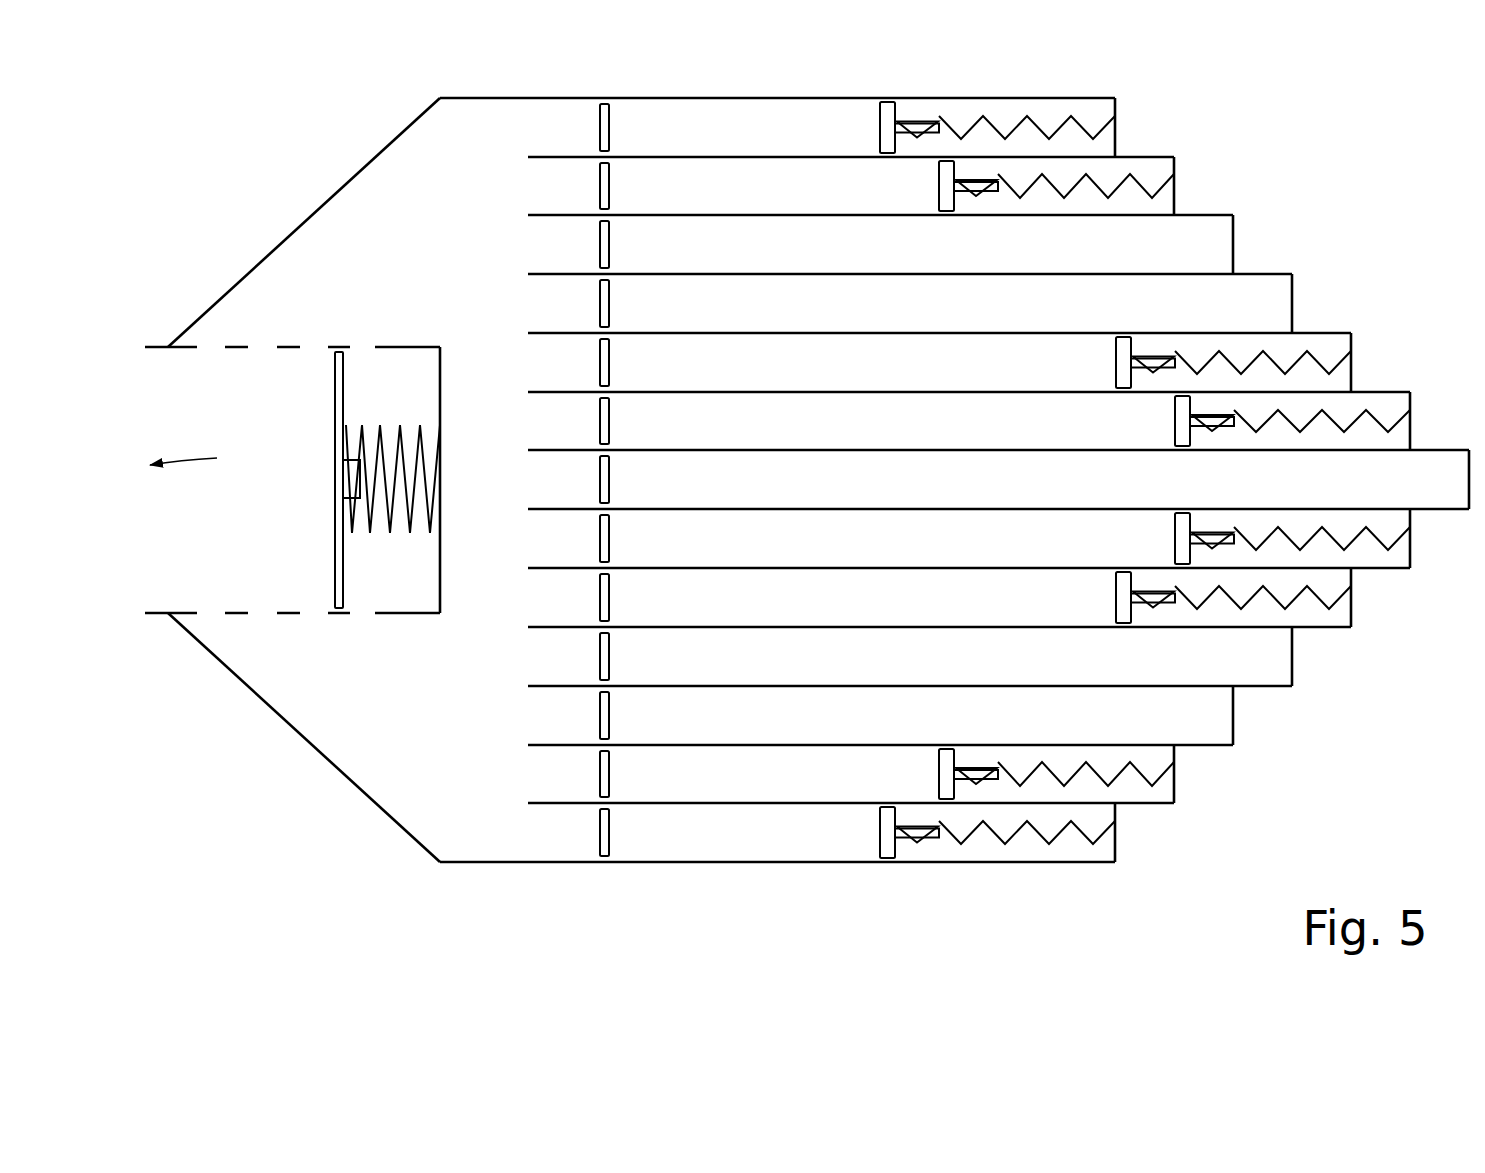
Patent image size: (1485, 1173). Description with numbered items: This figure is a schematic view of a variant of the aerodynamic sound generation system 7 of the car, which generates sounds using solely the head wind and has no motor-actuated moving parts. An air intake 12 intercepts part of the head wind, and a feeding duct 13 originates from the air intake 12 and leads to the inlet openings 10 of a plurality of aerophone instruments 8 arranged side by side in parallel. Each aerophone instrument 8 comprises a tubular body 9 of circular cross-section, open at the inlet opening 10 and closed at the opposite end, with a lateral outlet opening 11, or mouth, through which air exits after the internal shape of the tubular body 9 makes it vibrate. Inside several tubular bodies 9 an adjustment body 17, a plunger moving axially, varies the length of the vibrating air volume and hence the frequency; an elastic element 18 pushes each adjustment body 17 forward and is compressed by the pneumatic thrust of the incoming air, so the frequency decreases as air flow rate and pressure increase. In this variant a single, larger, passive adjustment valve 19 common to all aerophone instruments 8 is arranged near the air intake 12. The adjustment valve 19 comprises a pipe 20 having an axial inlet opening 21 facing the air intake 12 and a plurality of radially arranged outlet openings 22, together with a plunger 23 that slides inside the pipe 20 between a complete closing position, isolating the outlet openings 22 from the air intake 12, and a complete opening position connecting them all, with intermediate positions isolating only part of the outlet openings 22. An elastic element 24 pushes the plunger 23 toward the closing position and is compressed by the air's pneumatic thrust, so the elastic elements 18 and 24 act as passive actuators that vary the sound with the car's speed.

The aerodynamic sound generation system 7 is at (783, 527).
The aerophone instrument 8 is at (944, 527).
The tubular body 9 is at (755, 827).
The inlet opening 10 is at (944, 527).
The outlet opening 11 is at (603, 833).
The air intake 12 is at (269, 515).
The feeding duct 13 is at (352, 842).
The adjustment body 17 is at (887, 838).
The elastic element 18 is at (1058, 835).
The adjustment valve 19 is at (298, 298).
The pipe 20 is at (240, 347).
The inlet opening 21 is at (201, 460).
The outlet openings 22 is at (263, 620).
The plunger 23 is at (338, 590).
The elastic element 24 is at (410, 533).